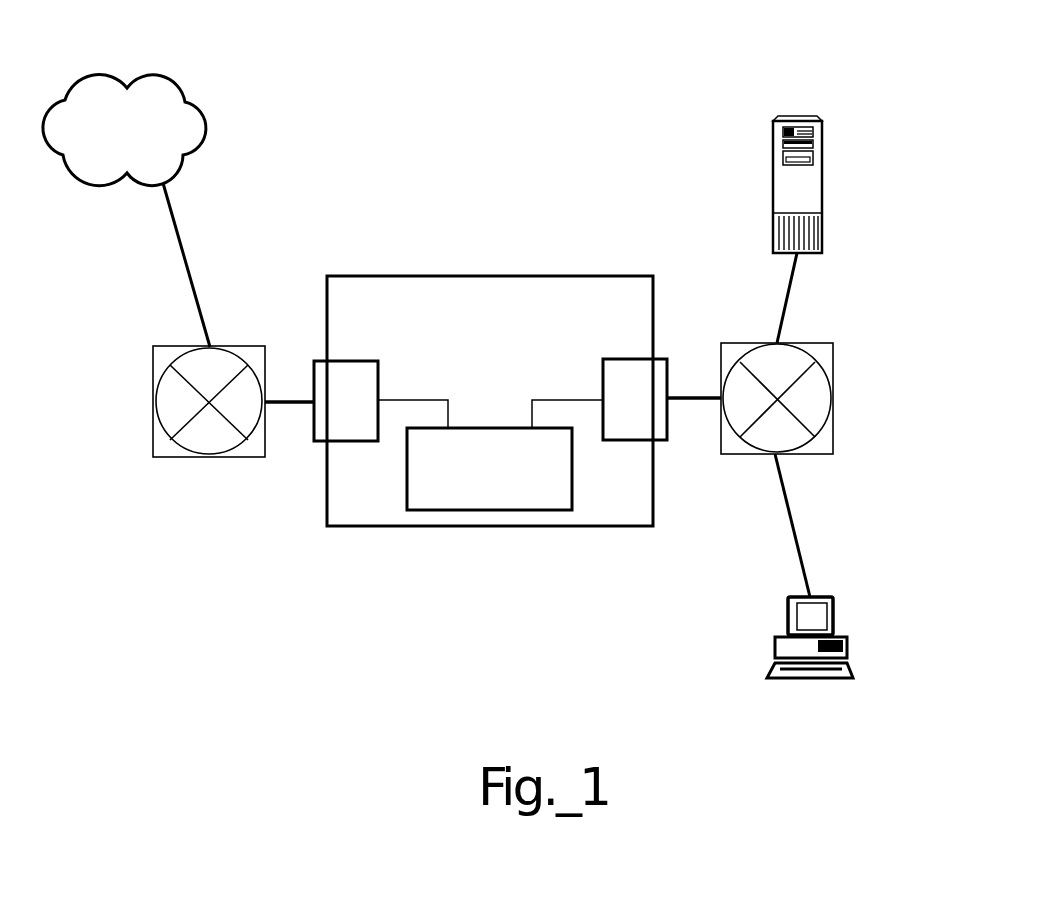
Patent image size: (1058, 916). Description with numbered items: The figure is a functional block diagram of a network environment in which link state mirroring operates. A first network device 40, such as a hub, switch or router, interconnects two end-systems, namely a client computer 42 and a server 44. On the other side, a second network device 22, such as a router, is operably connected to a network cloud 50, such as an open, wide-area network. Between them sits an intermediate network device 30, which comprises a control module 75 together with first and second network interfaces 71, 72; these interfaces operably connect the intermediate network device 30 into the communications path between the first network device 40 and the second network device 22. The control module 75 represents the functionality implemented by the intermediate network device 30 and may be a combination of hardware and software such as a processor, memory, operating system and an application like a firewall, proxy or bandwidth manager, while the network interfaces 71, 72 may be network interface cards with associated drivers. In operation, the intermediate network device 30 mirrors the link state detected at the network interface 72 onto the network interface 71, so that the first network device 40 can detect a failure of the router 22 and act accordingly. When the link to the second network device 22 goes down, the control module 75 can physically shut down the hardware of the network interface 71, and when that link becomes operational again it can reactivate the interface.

The network cloud 50 is at (165, 77).
The second network device 22 is at (237, 347).
The intermediate network device 30 is at (572, 276).
The second network interface 72 is at (313, 422).
The control module 75 is at (490, 511).
The first network interface 71 is at (667, 378).
The first network device 40 is at (833, 398).
The server 44 is at (813, 117).
The client computer 42 is at (832, 680).